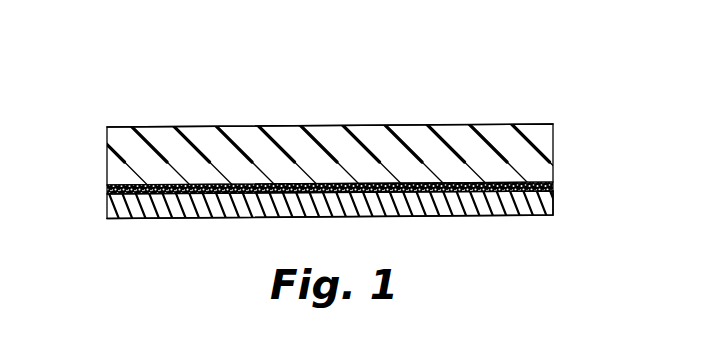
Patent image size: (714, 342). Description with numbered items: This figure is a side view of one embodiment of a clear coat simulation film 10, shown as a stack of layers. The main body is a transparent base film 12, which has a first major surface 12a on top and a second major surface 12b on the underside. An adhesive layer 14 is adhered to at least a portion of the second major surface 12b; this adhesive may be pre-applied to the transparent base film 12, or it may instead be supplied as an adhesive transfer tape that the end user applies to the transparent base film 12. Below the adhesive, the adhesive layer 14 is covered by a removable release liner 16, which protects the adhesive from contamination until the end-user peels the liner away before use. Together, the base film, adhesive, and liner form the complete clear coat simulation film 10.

The clear coat simulation film 10 is at (335, 143).
The transparent base film 12 is at (354, 124).
The first major surface 12a is at (520, 124).
The second major surface 12b is at (553, 207).
The adhesive layer 14 is at (108, 194).
The removable release liner 16 is at (210, 210).